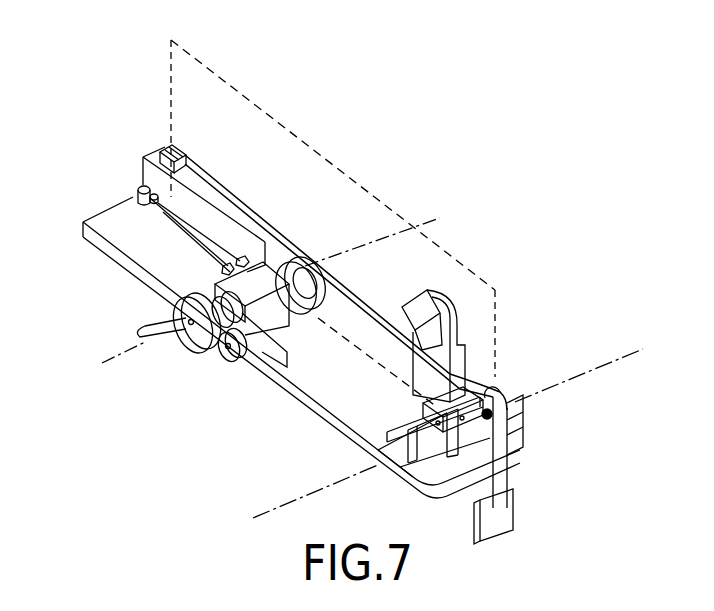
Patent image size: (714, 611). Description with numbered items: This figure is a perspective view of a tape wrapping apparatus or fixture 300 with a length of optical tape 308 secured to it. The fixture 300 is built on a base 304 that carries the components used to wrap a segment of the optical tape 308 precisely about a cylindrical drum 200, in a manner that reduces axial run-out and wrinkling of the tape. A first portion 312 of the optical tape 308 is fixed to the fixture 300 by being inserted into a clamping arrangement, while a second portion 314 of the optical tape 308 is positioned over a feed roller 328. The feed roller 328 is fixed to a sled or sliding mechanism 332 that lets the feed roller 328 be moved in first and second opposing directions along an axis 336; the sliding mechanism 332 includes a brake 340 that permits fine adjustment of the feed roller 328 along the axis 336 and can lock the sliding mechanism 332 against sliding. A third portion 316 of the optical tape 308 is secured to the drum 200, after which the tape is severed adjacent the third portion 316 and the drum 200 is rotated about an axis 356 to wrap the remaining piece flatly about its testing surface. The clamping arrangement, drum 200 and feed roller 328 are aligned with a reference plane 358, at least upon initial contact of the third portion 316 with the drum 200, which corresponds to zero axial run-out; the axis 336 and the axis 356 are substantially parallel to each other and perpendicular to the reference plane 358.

The fixture 300 is at (88, 205).
The base 304 is at (122, 247).
The optical tape 308 is at (518, 484).
The first portion 312 is at (190, 167).
The second portion 314 is at (492, 390).
The third portion 316 is at (325, 242).
The drum 200 is at (367, 308).
The feed roller 328 is at (520, 408).
The sliding mechanism 332 is at (538, 446).
The axis 336 is at (628, 350).
The brake 340 is at (468, 470).
The axis 356 is at (428, 220).
The reference plane 358 is at (277, 117).